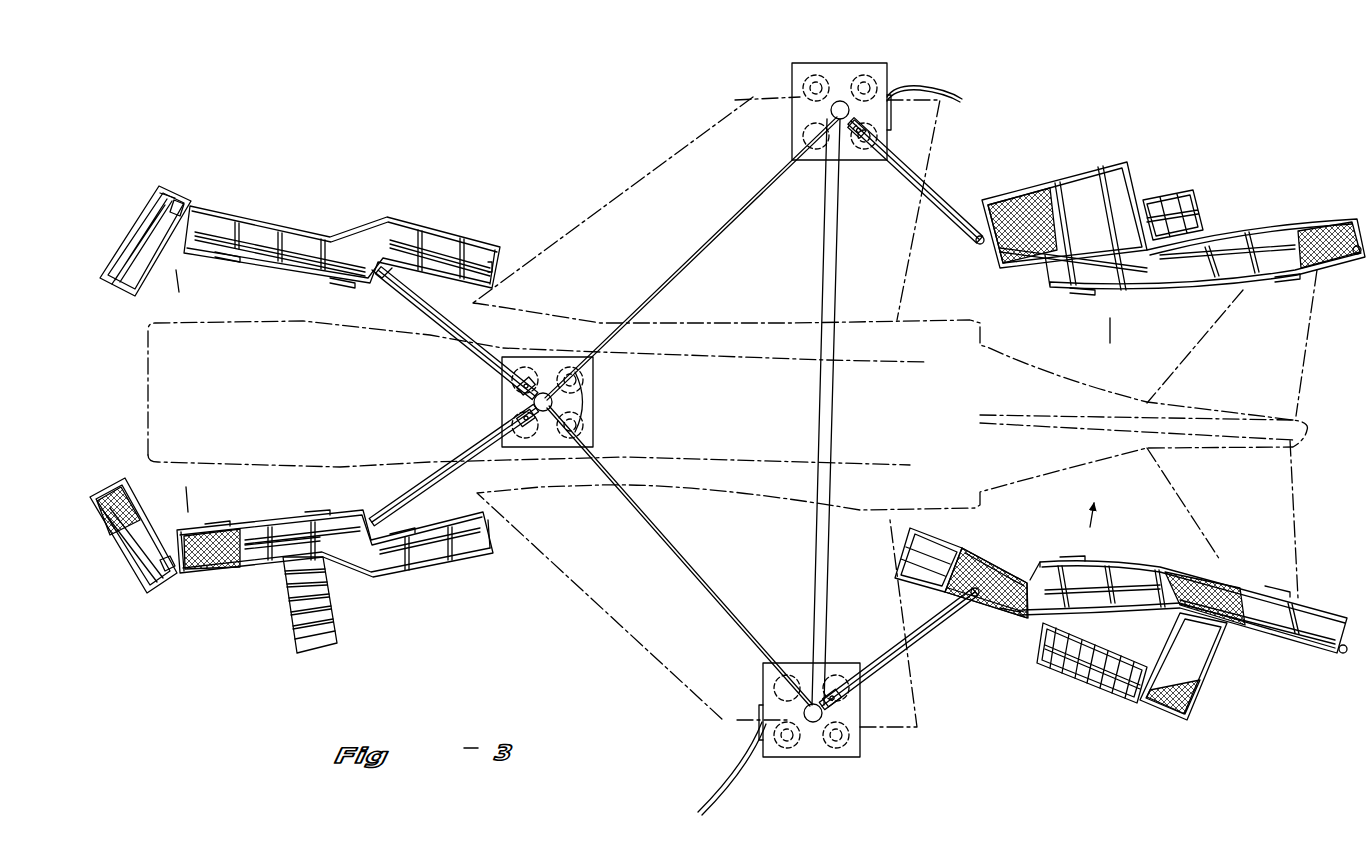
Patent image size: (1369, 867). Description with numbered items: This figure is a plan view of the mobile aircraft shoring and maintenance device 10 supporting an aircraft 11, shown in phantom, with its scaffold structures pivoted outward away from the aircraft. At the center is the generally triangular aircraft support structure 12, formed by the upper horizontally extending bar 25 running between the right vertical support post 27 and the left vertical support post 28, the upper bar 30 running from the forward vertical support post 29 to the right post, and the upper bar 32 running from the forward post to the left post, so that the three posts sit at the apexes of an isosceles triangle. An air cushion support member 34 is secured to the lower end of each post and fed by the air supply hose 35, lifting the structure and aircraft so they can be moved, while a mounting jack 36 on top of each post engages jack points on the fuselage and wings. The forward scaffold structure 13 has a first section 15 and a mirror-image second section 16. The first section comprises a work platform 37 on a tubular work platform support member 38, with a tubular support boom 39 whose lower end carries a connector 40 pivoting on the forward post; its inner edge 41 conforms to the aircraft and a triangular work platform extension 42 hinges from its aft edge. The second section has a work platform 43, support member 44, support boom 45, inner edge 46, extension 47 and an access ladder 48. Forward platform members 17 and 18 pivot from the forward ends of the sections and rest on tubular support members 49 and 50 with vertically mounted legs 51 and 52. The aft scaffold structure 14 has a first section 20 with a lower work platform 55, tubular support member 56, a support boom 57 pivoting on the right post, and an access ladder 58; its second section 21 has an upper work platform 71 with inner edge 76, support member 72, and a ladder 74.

The mobile aircraft shoring and maintenance device 10 is at (1130, 423).
The aircraft 11 is at (655, 163).
The aircraft support structure 12 is at (692, 258).
The forward scaffold structure 13 is at (310, 407).
The aft scaffold structure 14 is at (1130, 432).
The first section 15 is at (367, 240).
The second section 16 is at (360, 557).
The forward platform member 17 is at (140, 217).
The forward platform member 18 is at (134, 556).
The first section 20 is at (1302, 224).
The second section 21 is at (980, 615).
The upper horizontally extending bar 25 is at (827, 424).
The right vertical support post 27 is at (850, 108).
The left vertical support post 28 is at (830, 703).
The forward vertical support post 29 is at (543, 393).
The upper horizontally extending bar 30 is at (753, 185).
The upper horizontally extending bar 32 is at (690, 578).
The air cushion support member 34 is at (595, 420).
The air supply hose 35 is at (743, 777).
The mounting jack 36 is at (534, 401).
The work platform 37 is at (382, 235).
The tubular work platform support member 38 is at (305, 250).
The tubular support boom 39 is at (468, 332).
The connector 40 is at (530, 425).
The inner edge 41 is at (385, 285).
The work platform extension 42 is at (500, 258).
The work platform 43 is at (203, 570).
The tubular work platform support member 44 is at (290, 556).
The tubular support boom 45 is at (467, 463).
The inner edge 46 is at (360, 518).
The work platform extension 47 is at (490, 553).
The access ladder 48 is at (340, 643).
The tubular support member 49 is at (146, 205).
The tubular support member 50 is at (140, 553).
The vertically mounted leg 51 is at (176, 200).
The vertically mounted leg 52 is at (165, 572).
The lower work platform 55 is at (1043, 190).
The tubular lower work platform support member 56 is at (1085, 212).
The tubular support boom 57 is at (925, 187).
The access ladder 58 is at (1167, 200).
The upper work platform 71 is at (1200, 600).
The upper work platform support member 72 is at (1125, 580).
The ladder 74 is at (1085, 678).
The inner edge 76 is at (970, 548).